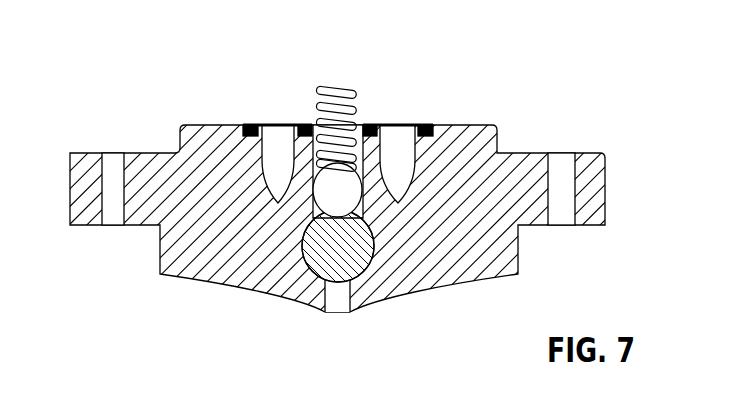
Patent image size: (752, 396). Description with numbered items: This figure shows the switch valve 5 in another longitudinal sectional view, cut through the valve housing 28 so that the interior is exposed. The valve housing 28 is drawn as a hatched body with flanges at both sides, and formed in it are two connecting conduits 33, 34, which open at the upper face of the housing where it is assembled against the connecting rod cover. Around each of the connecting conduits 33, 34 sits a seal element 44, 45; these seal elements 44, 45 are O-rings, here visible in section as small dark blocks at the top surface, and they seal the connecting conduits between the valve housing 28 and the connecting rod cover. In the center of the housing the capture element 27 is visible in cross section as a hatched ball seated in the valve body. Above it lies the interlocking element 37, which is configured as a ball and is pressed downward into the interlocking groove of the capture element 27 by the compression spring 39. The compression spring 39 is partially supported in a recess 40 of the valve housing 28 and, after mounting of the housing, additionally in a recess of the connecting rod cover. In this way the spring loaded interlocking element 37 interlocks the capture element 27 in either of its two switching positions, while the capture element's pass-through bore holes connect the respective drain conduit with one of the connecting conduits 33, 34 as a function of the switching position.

The switch valve 5 is at (107, 117).
The capture element 27 is at (368, 268).
The valve housing 28 is at (518, 162).
The connecting conduit 33 is at (276, 140).
The connecting conduit 34 is at (397, 140).
The interlocking element 37 is at (346, 203).
The compression spring 39 is at (337, 90).
The recess 40 is at (357, 172).
The seal element 44 is at (246, 125).
The seal element 45 is at (427, 125).